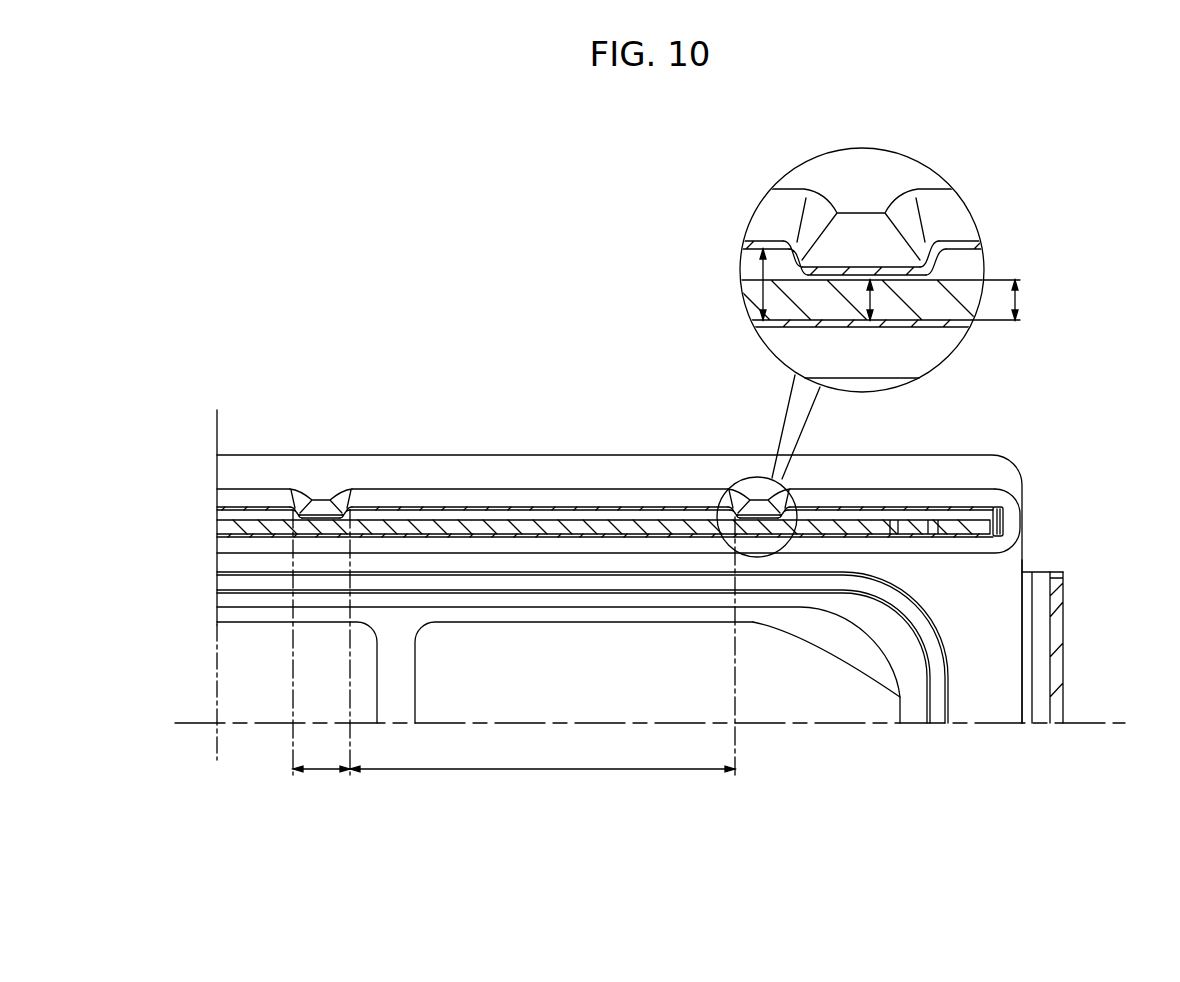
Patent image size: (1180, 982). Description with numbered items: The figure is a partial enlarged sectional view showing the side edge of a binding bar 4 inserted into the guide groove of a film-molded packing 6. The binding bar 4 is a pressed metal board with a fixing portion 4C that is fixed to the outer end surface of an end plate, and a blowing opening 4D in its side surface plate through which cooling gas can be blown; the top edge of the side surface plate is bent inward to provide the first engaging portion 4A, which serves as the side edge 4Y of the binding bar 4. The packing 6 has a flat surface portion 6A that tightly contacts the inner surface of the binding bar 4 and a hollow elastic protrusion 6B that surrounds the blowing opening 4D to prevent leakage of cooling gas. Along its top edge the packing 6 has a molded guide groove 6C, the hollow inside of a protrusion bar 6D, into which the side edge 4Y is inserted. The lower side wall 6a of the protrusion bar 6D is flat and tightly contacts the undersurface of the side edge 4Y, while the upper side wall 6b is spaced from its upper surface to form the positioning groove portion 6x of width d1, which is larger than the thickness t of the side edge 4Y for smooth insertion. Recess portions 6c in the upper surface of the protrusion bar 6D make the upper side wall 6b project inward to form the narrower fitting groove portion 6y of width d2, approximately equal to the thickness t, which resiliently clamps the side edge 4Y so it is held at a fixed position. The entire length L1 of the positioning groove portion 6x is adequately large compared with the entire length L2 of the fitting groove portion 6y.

The packing 6 is at (650, 572).
The flat surface portion 6A is at (980, 663).
The elastic protrusion 6B is at (799, 582).
The guide groove 6C is at (618, 295).
The protrusion bar 6D is at (1012, 517).
The lower side wall 6a is at (621, 535).
The upper side wall 6b is at (626, 295).
The recess portion 6c is at (317, 502).
The positioning groove portion 6x is at (448, 512).
The fitting groove portion 6y is at (327, 516).
The binding bar 4 is at (1089, 608).
The first engaging portion 4A is at (493, 527).
The side edge 4Y is at (664, 376).
The fixing portion 4C is at (1058, 663).
The blowing opening 4D is at (863, 677).
The width of positioning groove portion d1 is at (763, 287).
The width of fitting groove portion d2 is at (878, 300).
The thickness of side edge t is at (1025, 300).
The entire length of positioning groove portion L1 is at (542, 646).
The entire length of fitting groove portion L2 is at (321, 642).